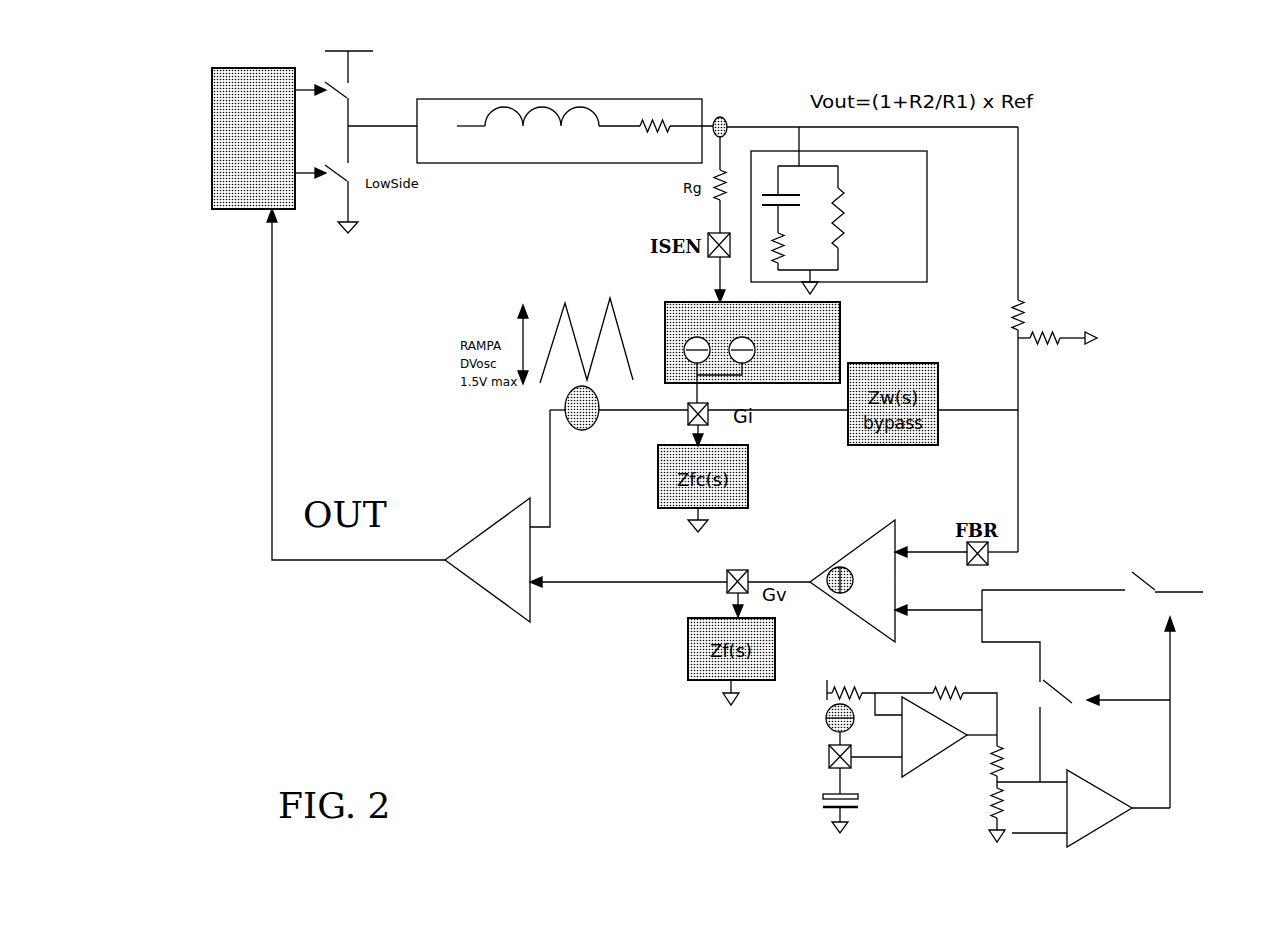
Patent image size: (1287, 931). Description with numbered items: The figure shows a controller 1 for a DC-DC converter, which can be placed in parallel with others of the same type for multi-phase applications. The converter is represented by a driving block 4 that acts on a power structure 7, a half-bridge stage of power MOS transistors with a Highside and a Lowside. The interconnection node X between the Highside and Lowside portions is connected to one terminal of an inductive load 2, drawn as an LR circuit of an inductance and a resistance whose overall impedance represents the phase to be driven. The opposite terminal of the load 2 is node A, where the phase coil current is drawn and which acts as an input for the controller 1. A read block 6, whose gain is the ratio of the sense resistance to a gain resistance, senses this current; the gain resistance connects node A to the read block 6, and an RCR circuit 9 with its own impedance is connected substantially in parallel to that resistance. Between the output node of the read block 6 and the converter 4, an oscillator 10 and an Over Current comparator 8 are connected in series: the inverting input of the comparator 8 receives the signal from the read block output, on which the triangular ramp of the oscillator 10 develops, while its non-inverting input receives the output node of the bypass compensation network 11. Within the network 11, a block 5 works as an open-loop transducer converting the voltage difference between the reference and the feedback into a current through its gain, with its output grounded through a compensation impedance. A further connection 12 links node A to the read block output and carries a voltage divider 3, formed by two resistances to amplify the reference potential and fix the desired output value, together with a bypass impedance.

The controller 1 is at (1173, 212).
The inductive load 2 is at (557, 97).
The voltage divider 3 is at (1043, 307).
The driving block 4 is at (232, 130).
The error amplifier block 5 is at (860, 537).
The read block 6 is at (803, 359).
The power structure 7 is at (386, 99).
The Over Current comparator 8 is at (485, 572).
The RCR circuit 9 is at (878, 197).
The oscillator 10 is at (578, 397).
The bypass compensation network 11 is at (988, 650).
The connection 12 is at (1010, 218).
The node A is at (730, 100).
The interconnection node X is at (352, 130).